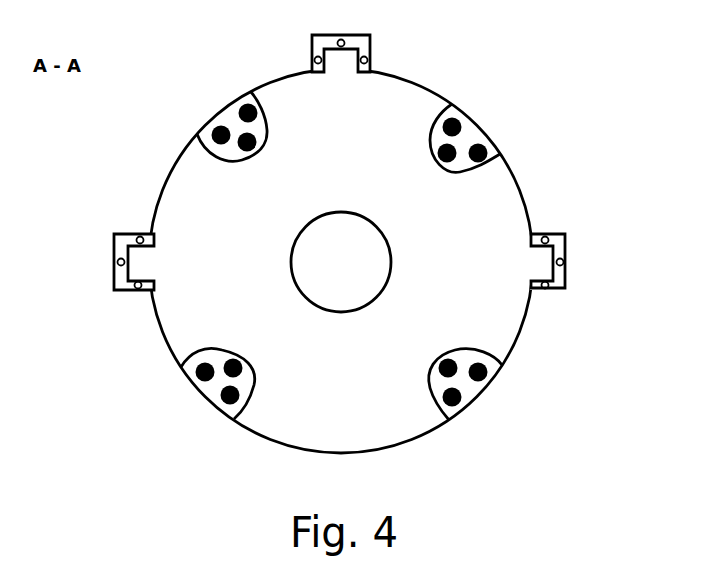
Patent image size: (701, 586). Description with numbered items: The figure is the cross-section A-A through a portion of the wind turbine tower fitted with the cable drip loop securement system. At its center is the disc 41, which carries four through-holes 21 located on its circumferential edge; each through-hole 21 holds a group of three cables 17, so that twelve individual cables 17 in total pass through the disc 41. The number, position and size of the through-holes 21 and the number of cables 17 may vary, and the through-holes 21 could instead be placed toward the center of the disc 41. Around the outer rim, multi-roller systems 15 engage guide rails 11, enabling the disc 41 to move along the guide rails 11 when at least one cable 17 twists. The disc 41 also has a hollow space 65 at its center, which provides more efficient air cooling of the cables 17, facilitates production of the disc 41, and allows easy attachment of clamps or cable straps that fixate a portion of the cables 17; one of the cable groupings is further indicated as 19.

The guide rail 11 is at (370, 44).
The multi-roller system 15 is at (290, 60).
The cable 17 is at (208, 400).
The cable bundle 19 is at (488, 111).
The through-hole 21 is at (499, 366).
The disc 41 is at (518, 181).
The hollow space 65 is at (391, 262).